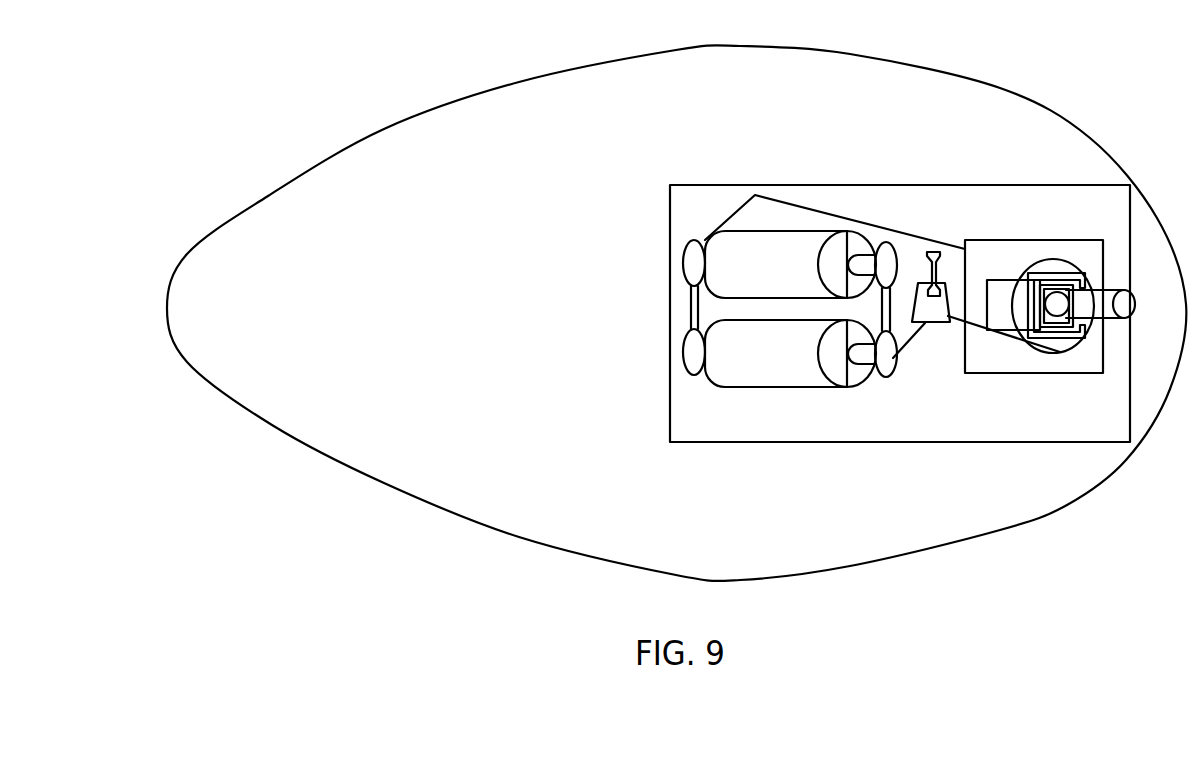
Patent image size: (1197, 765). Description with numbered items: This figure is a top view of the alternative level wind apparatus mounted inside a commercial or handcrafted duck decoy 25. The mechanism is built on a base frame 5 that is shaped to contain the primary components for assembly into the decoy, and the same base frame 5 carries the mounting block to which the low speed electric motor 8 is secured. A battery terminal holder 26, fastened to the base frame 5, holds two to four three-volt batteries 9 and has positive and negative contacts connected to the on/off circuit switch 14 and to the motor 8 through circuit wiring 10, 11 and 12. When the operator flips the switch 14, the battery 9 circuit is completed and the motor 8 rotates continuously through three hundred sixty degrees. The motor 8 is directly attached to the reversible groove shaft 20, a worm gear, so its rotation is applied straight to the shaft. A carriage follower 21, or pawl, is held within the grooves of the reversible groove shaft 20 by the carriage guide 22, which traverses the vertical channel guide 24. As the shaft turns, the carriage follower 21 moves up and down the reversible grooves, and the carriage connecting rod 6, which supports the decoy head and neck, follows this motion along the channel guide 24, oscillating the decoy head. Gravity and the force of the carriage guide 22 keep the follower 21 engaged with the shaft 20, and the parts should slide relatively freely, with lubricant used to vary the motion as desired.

The duck decoy 25 is at (487, 315).
The base frame 5 is at (693, 420).
The battery 9 is at (763, 366).
The battery terminal holder 26 is at (882, 367).
The circuit wiring 10 is at (837, 213).
The on/off circuit switch 14 is at (939, 312).
The circuit wiring 12 is at (925, 326).
The circuit wiring 11 is at (995, 302).
The carriage follower 21 is at (1056, 258).
The motor 8 is at (1048, 256).
The channel guide 24 is at (1037, 340).
The reversible groove shaft 20 is at (1070, 332).
The carriage connecting rod 6 is at (1135, 303).
The carriage guide 22 is at (1092, 339).